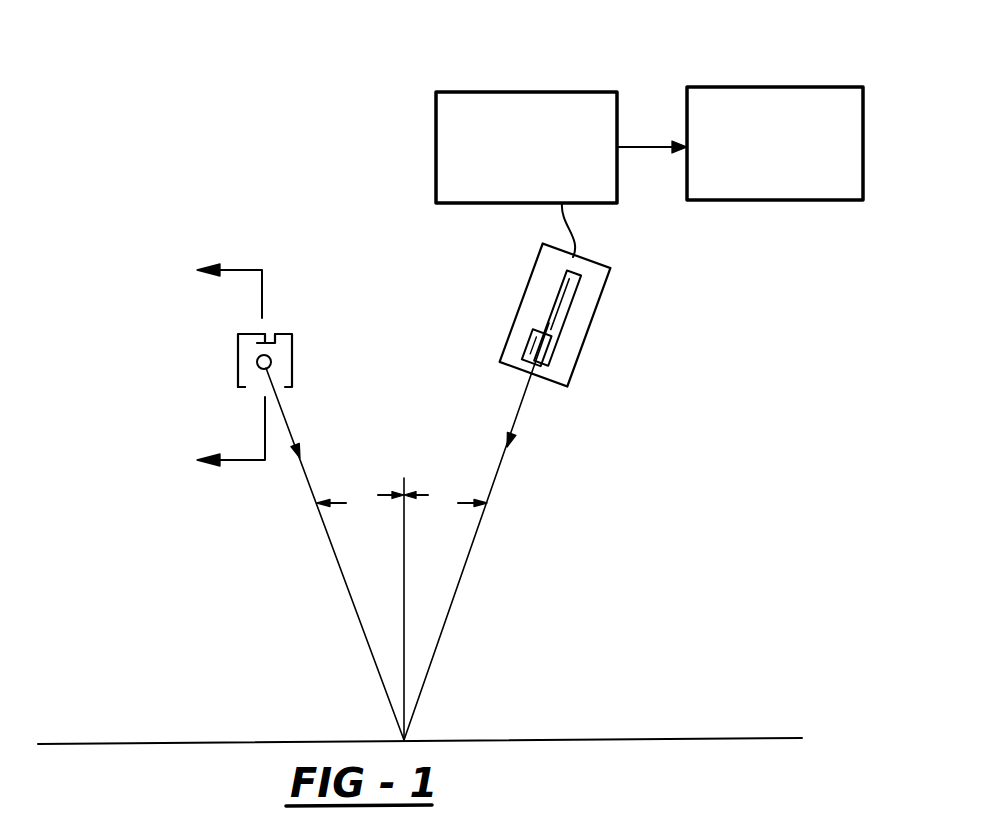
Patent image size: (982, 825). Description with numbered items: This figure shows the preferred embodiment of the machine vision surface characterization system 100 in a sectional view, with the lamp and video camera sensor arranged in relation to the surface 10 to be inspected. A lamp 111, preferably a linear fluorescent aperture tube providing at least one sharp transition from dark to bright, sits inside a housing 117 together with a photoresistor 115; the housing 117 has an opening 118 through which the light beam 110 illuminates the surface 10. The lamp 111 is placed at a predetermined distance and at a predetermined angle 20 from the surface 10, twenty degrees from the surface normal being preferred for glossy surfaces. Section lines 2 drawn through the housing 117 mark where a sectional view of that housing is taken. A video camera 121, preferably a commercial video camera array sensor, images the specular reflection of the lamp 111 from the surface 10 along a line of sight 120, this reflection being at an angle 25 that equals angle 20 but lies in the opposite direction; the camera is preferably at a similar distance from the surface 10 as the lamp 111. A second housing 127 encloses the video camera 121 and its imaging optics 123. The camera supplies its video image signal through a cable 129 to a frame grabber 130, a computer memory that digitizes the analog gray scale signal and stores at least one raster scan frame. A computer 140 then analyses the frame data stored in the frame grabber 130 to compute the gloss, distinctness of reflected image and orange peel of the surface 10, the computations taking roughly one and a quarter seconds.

The surface 10 is at (768, 738).
The measurement system 100 is at (367, 82).
The light beam 110 is at (285, 402).
The lamp 111 is at (244, 365).
The photoresistor 115 is at (268, 336).
The housing 117 is at (312, 342).
The opening 118 is at (238, 385).
The camera line of sight 120 is at (522, 417).
The video camera 121 is at (583, 293).
The imaging optics 123 is at (570, 357).
The housing 127 is at (520, 287).
The cable 129 is at (572, 233).
The frame grabber 130 is at (526, 147).
The computer 140 is at (775, 143).
The angle 20 is at (360, 499).
The angle 25 is at (445, 499).
The lines 2— 2 is at (231, 368).